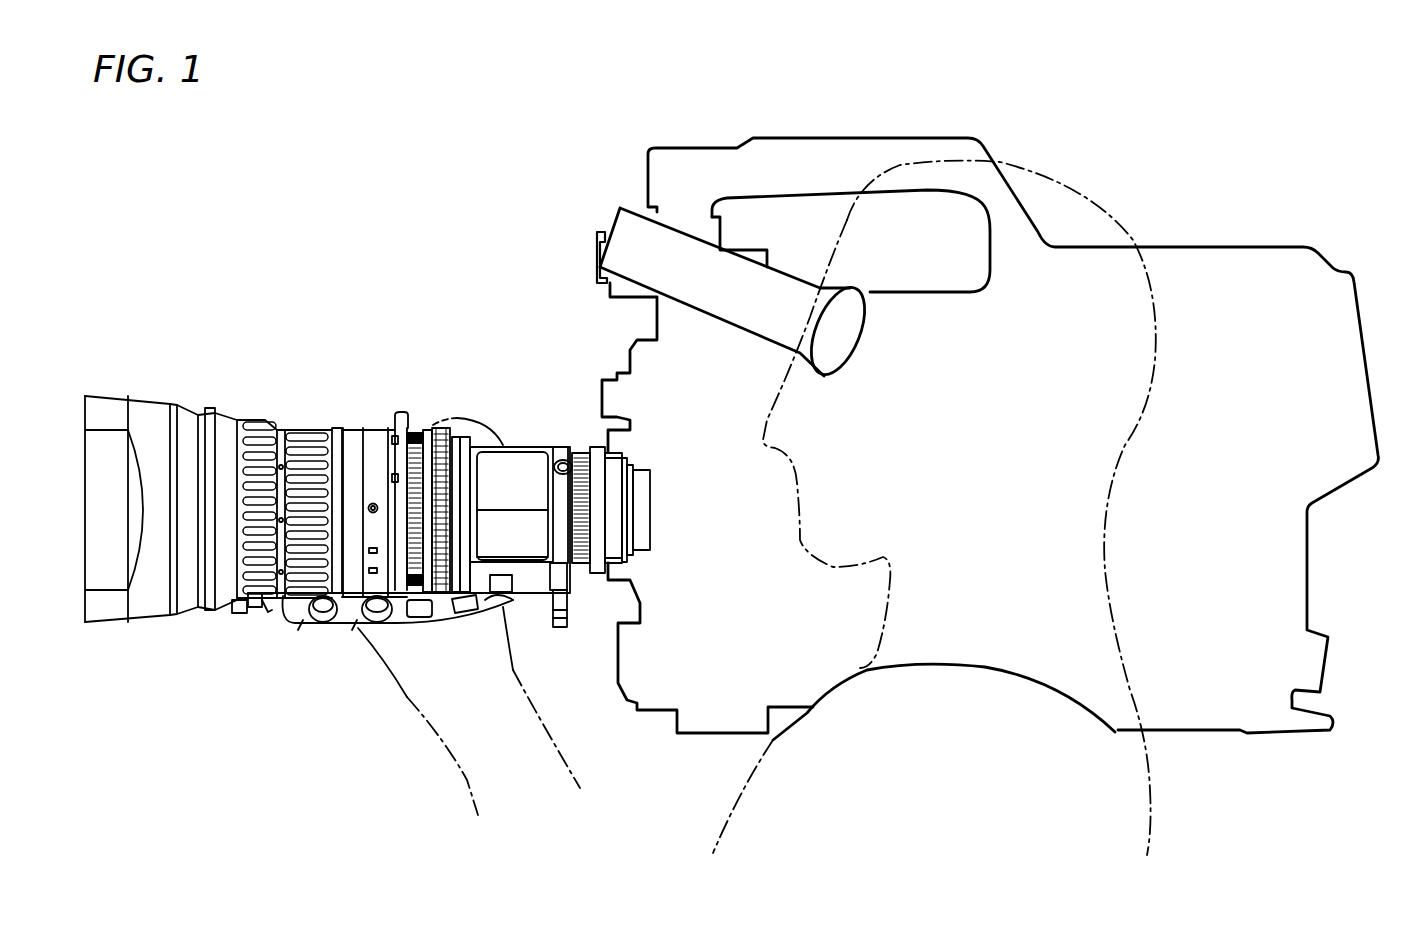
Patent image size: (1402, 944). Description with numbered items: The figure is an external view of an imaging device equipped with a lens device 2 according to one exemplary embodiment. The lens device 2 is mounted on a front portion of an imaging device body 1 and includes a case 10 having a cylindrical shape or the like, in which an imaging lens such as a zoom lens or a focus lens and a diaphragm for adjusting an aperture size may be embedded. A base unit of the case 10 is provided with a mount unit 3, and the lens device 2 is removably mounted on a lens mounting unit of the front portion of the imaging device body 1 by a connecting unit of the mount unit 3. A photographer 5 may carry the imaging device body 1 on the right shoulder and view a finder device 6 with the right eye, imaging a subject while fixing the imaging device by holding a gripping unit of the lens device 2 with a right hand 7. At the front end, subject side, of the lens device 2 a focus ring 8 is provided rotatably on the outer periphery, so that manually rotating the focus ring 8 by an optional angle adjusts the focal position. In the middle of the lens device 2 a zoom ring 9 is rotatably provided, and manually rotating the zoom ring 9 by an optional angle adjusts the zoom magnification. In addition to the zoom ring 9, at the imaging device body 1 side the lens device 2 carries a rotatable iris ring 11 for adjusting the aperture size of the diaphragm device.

The imaging device body 1 is at (1267, 243).
The lens device 2 is at (333, 426).
The mount unit 3 is at (583, 565).
The photographer 5 is at (1130, 817).
The finder device 6 is at (688, 255).
The right hand 7 is at (483, 788).
The focus ring 8 is at (260, 627).
The zoom ring 9 is at (412, 428).
The case 10 is at (353, 627).
The iris ring 11 is at (433, 426).